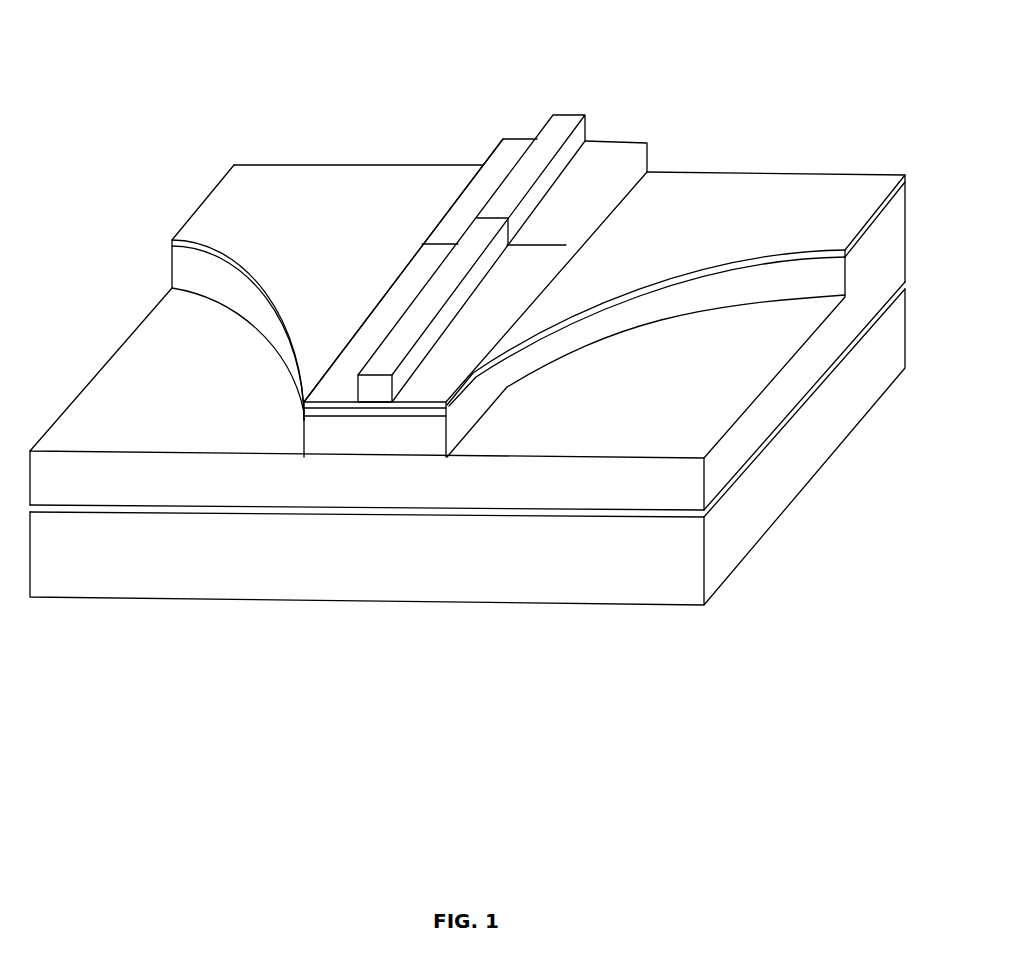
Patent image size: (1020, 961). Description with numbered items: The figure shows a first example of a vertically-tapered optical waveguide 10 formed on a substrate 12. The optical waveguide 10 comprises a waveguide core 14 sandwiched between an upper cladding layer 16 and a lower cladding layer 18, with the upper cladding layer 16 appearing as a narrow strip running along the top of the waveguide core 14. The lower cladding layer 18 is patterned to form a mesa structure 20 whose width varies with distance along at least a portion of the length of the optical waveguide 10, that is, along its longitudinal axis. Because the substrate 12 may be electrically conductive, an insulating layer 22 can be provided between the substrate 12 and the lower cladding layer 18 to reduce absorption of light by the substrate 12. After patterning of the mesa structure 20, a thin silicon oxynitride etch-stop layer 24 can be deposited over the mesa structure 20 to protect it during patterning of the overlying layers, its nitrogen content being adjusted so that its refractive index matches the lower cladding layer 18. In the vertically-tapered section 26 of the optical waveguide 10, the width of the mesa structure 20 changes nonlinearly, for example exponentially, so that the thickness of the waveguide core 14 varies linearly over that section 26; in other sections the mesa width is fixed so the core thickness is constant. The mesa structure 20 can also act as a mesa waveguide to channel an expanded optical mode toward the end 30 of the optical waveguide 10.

The optical waveguide 10 is at (510, 109).
The substrate 12 is at (65, 569).
The waveguide core 14 is at (650, 158).
The upper cladding layer 16 is at (592, 127).
The lower cladding layer 18 is at (65, 489).
The mesa structure 20 is at (460, 415).
The insulating layer 22 is at (368, 507).
The silicon oxynitride etch-stop layer 24 is at (172, 243).
The vertically-tapered section 26 is at (368, 302).
The end 30 is at (323, 440).